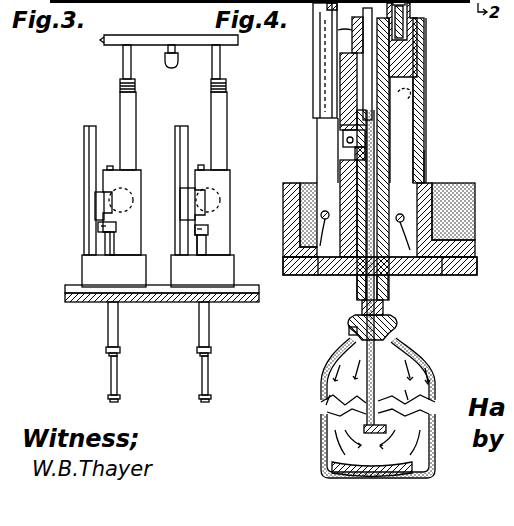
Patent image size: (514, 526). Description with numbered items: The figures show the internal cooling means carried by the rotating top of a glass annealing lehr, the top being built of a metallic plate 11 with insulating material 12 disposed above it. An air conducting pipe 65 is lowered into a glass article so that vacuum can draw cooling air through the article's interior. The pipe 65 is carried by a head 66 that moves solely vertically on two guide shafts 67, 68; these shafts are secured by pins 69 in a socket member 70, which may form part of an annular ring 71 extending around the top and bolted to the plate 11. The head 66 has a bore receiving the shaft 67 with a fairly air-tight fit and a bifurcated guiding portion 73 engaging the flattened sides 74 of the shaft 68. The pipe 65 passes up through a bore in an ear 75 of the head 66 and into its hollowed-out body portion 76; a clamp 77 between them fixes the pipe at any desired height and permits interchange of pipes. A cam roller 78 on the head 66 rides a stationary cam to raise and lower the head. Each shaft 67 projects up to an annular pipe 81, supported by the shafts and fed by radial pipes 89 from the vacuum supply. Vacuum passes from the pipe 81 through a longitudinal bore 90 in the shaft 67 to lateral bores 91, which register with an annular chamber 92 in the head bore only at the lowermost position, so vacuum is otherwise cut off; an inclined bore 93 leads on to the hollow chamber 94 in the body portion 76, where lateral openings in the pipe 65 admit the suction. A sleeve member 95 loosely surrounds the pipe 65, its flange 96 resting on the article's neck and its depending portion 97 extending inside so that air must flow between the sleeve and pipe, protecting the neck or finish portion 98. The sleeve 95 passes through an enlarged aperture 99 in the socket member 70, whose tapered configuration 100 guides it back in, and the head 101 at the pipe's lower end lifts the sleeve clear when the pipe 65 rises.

In FIG. 3, the metallic plate 11 is at (78, 302).
In FIG. 4, the metallic plate 11 is at (477, 261).
In FIG. 4, the insulating material 12 is at (452, 190).
In FIG. 3, the air conducting pipe 65 is at (205, 380).
In FIG. 4, the air conducting pipe 65 is at (378, 362).
In FIG. 3, the head 66 is at (140, 178).
In FIG. 4, the head 66 is at (426, 112).
In FIG. 3, the guide shaft 67 is at (128, 110).
In FIG. 4, the guide shaft 67 is at (404, 123).
In FIG. 3, the guide shaft 68 is at (176, 131).
In FIG. 4, the guide shaft 68 is at (327, 135).
In FIG. 4, the pin 69 is at (318, 274).
In FIG. 3, the socket member 70 is at (97, 266).
In FIG. 4, the socket member 70 is at (448, 196).
In FIG. 3, the annular ring 71 is at (80, 287).
In FIG. 4, the annular ring 71 is at (478, 253).
In FIG. 3, the bifurcated guiding portion 73 is at (100, 202).
In FIG. 4, the bifurcated guiding portion 73 is at (340, 127).
In FIG. 4, the flattened sides 74 is at (327, 22).
In FIG. 4, the ear 75 is at (355, 157).
In FIG. 4, the hollowed-out body portion 76 is at (376, 32).
In FIG. 3, the clamp 77 is at (96, 226).
In FIG. 4, the clamp 77 is at (355, 130).
In FIG. 3, the cam roller 78 is at (108, 195).
In FIG. 4, the cam roller 78 is at (392, 106).
In FIG. 3, the annular pipe 81 is at (108, 40).
In FIG. 3, the radial pipe 89 is at (170, 68).
In FIG. 4, the longitudinal bore 90 is at (422, 44).
In FIG. 4, the lateral bore 91 is at (408, 4).
In FIG. 4, the annular chamber 92 is at (418, 25).
In FIG. 4, the inclined bore 93 is at (332, 28).
In FIG. 4, the hollow chamber 94 is at (372, 55).
In FIG. 3, the sleeve member 95 is at (203, 334).
In FIG. 4, the sleeve member 95 is at (357, 287).
In FIG. 4, the flange 96 is at (394, 318).
In FIG. 4, the depending portion 97 is at (337, 343).
In FIG. 4, the neck or finish portion 98 is at (352, 334).
In FIG. 4, the enlarged aperture 99 is at (425, 160).
In FIG. 4, the tapered configuration 100 is at (388, 278).
In FIG. 4, the head 101 is at (360, 423).